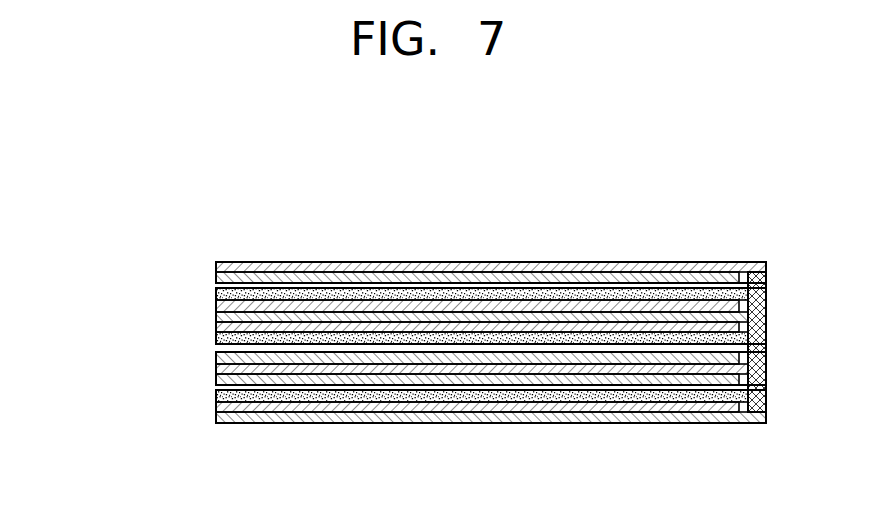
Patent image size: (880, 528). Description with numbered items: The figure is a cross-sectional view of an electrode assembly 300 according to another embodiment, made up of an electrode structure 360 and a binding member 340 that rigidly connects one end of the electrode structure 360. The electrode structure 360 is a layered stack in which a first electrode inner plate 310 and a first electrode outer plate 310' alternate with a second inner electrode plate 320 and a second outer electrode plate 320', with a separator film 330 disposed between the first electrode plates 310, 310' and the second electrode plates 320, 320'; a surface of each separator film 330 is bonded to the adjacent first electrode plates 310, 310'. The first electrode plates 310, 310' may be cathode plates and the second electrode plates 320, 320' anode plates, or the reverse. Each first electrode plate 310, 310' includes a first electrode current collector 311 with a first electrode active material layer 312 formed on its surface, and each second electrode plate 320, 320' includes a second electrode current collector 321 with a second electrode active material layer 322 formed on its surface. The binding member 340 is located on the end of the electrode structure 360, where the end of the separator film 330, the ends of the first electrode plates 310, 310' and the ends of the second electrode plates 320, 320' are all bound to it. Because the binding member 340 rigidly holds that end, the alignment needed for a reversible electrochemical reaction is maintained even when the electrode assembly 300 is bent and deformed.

The electrode assembly 300 is at (770, 224).
The first electrode inner plate 310 is at (427, 313).
The first electrode outer plate 310' is at (427, 434).
The first electrode current collector 311 is at (222, 317).
The first electrode active material layer 312 is at (222, 306).
The second inner electrode plate 320 is at (427, 383).
The second outer electrode plate 320' is at (427, 241).
The second electrode current collector 321 is at (230, 266).
The second electrode active material layer 322 is at (222, 278).
The separator film 330 is at (222, 294).
The binding member 340 is at (757, 281).
The electrode structure 360 is at (84, 227).